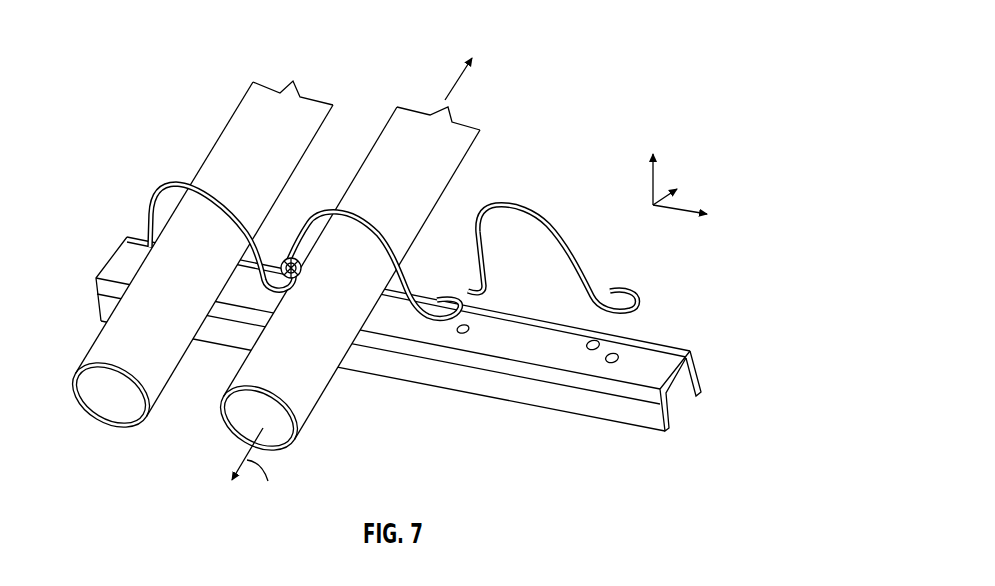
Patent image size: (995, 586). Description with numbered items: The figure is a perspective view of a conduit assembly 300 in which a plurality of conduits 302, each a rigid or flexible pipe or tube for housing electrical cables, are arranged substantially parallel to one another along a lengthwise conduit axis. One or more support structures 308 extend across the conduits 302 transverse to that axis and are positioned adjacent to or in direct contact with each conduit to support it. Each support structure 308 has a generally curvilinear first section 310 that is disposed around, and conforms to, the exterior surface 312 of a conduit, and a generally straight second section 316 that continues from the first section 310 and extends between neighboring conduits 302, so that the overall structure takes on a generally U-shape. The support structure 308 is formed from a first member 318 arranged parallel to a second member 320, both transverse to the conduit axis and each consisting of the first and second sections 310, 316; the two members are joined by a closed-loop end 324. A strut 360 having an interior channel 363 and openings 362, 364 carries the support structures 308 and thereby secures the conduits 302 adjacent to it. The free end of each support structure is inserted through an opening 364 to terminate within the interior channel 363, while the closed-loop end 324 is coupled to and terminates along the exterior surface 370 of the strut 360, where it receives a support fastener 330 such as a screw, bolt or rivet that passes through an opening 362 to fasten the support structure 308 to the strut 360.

The conduit assembly 300 is at (168, 42).
The conduits 302 is at (311, 106).
The support structures 308 is at (143, 191).
The first section 310 is at (188, 186).
The exterior surface 312 is at (284, 166).
The second section 316 is at (272, 298).
The first member 318 is at (357, 208).
The second member 320 is at (442, 289).
The closed-loop end 324 is at (639, 298).
The support fastener 330 is at (274, 257).
The strut 360 is at (632, 430).
The openings 362 is at (134, 256).
The interior channel 363 is at (683, 402).
The openings 364 is at (629, 345).
The exterior surface 370 is at (527, 332).